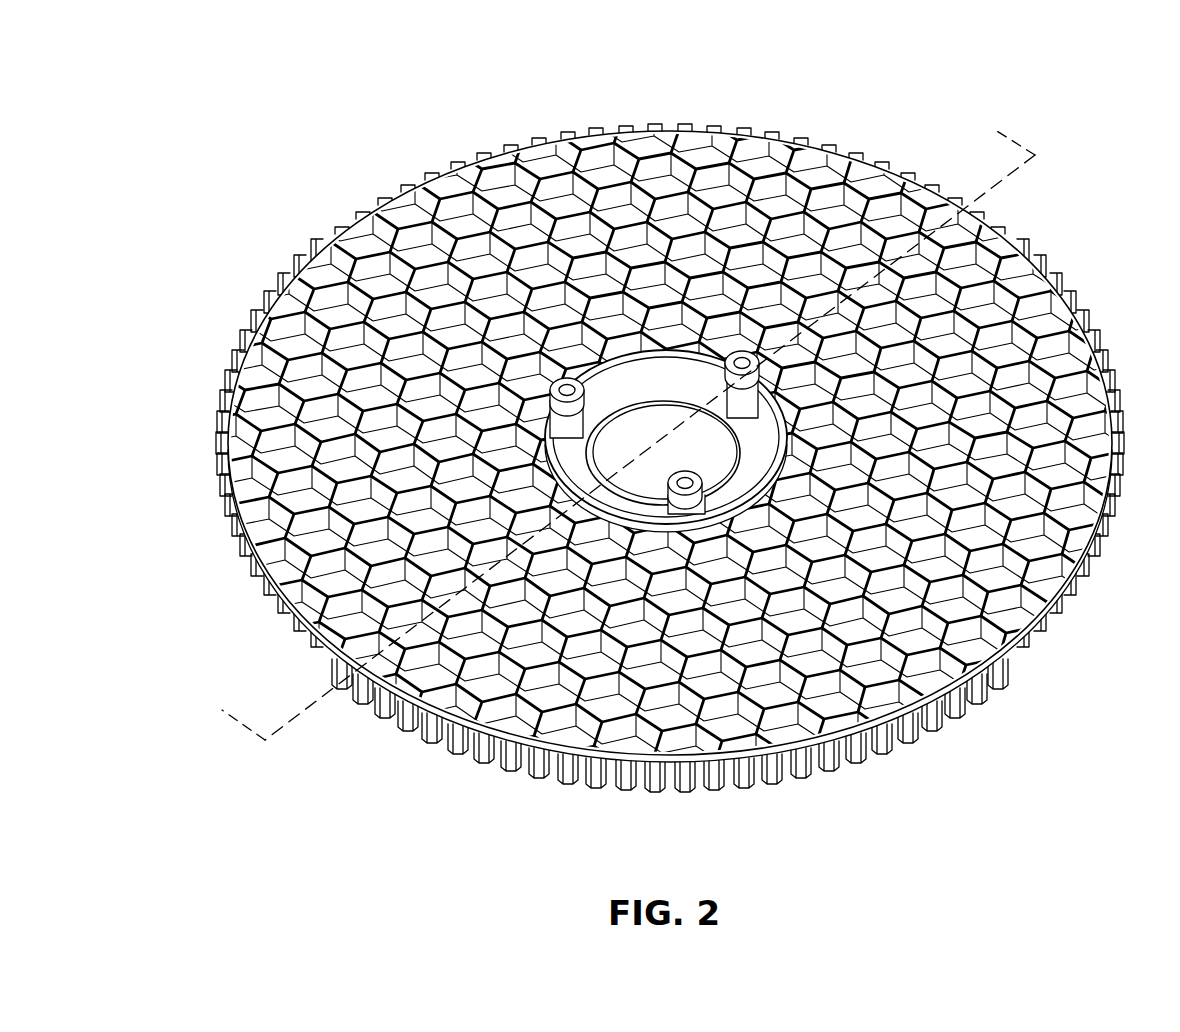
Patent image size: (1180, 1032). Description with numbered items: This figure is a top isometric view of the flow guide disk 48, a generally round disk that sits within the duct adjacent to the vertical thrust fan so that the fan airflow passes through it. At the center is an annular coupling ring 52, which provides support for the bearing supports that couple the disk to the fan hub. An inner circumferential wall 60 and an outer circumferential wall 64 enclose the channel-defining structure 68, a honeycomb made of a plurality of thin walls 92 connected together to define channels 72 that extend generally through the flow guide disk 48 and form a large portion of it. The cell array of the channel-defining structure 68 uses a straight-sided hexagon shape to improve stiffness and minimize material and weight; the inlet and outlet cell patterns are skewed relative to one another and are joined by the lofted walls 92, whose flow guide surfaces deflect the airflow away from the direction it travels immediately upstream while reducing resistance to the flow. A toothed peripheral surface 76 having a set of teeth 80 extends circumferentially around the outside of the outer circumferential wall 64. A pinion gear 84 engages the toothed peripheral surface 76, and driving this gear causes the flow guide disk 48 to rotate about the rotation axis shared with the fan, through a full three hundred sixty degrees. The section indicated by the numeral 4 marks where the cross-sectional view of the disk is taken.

The flow guide disk 48 is at (651, 414).
The annular coupling ring 52 is at (663, 385).
The inner circumferential wall 60 is at (1010, 697).
The outer circumferential wall 64 is at (718, 128).
The channel-defining structure 68 is at (795, 205).
The channels 72 is at (309, 378).
The toothed peripheral surface 76 is at (1108, 322).
The teeth 80 is at (1112, 560).
The pinion gear 84 is at (560, 372).
The thin walls 92 is at (649, 414).
The section line 4- 4 is at (175, 102).